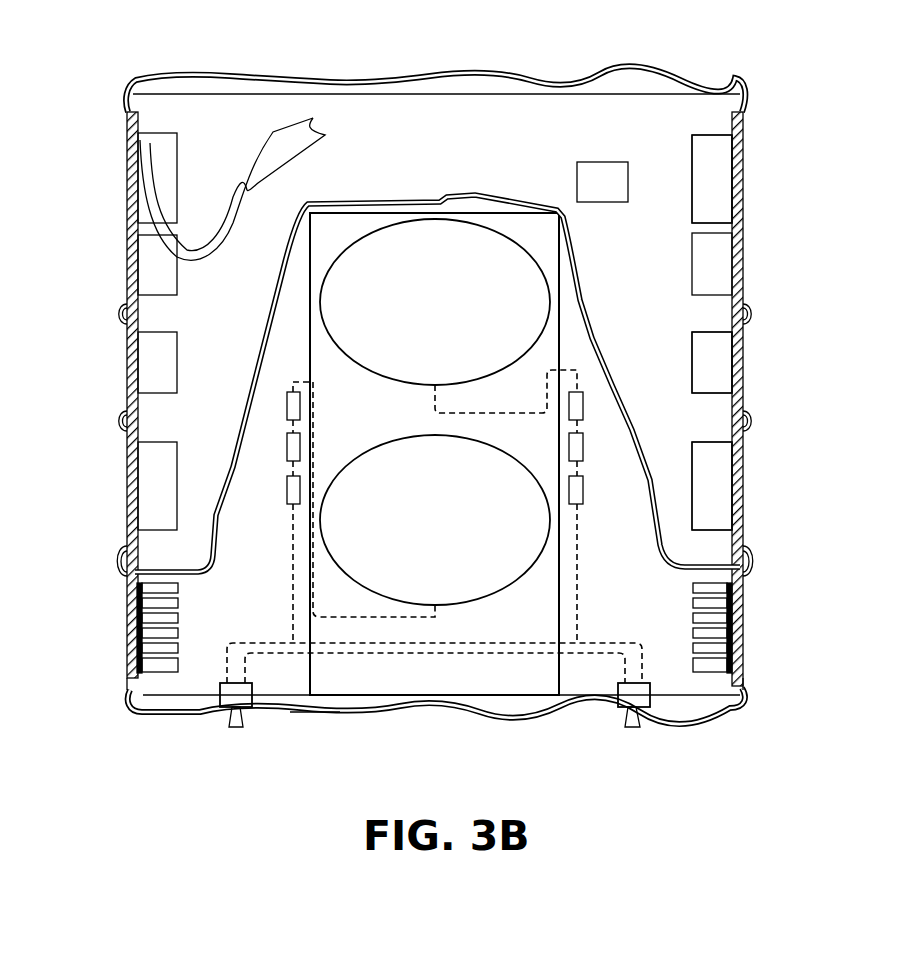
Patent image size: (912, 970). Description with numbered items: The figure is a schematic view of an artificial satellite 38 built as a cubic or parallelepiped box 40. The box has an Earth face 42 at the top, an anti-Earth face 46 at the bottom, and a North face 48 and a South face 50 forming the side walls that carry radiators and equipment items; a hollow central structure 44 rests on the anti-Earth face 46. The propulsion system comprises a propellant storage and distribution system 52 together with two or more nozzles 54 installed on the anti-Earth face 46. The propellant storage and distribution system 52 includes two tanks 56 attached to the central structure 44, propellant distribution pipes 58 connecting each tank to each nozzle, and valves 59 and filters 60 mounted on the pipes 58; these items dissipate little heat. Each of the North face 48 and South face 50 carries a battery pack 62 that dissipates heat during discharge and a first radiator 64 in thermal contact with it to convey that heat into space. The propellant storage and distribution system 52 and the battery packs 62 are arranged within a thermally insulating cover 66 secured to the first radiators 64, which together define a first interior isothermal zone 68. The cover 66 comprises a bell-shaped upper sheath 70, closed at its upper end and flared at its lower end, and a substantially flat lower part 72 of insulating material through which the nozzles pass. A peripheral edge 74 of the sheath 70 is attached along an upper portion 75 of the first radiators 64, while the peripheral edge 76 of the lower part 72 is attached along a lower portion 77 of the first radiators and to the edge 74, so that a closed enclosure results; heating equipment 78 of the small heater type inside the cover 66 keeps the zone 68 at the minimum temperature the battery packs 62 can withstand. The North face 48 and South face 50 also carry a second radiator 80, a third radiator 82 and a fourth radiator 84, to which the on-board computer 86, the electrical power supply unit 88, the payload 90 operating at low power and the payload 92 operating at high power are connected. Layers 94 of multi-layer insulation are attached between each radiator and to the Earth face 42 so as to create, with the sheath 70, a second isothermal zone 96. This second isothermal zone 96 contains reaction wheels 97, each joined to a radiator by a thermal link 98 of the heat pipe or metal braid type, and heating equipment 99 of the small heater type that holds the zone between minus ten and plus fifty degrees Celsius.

The artificial satellite 38 is at (251, 760).
The box 40 is at (380, 722).
The Earth face 42 is at (579, 92).
The hollow central structure 44 is at (437, 383).
The anti-Earth face 46 is at (548, 698).
The North face 48 is at (743, 190).
The South face 50 is at (127, 180).
The propellant storage and distribution system 52 is at (489, 208).
The nozzles 54 is at (643, 712).
The tanks 56 is at (419, 315).
The propellant distribution pipes 58 is at (578, 370).
The valves 59 is at (584, 405).
The filters 60 is at (585, 447).
The battery pack 62 is at (168, 665).
The first radiator 64 is at (432, 678).
The thermally insulating cover 66 is at (437, 344).
The first interior isothermal zone 68 is at (497, 631).
The upper sheath 70 is at (584, 268).
The lower part of insulating material 72 is at (316, 714).
The peripheral edge 74 is at (431, 556).
The upper portion 75 is at (118, 562).
The peripheral edge 76 is at (436, 698).
The lower portion 77 is at (133, 685).
The heating equipment 78 is at (432, 678).
The second radiator 80 is at (127, 497).
The third radiator 82 is at (127, 377).
The fourth radiator 84 is at (127, 257).
The on-board computer 86 is at (769, 476).
The electrical power supply unit 88 is at (712, 462).
The payload operating at low power 90 is at (712, 345).
The payload operating at high power 92 is at (712, 158).
The layers of multi-layer insulation 94 is at (120, 313).
The second isothermal zone 96 is at (419, 157).
The reaction wheels 97 is at (258, 185).
The thermal link 98 is at (250, 150).
The heating equipment 99 is at (602, 182).